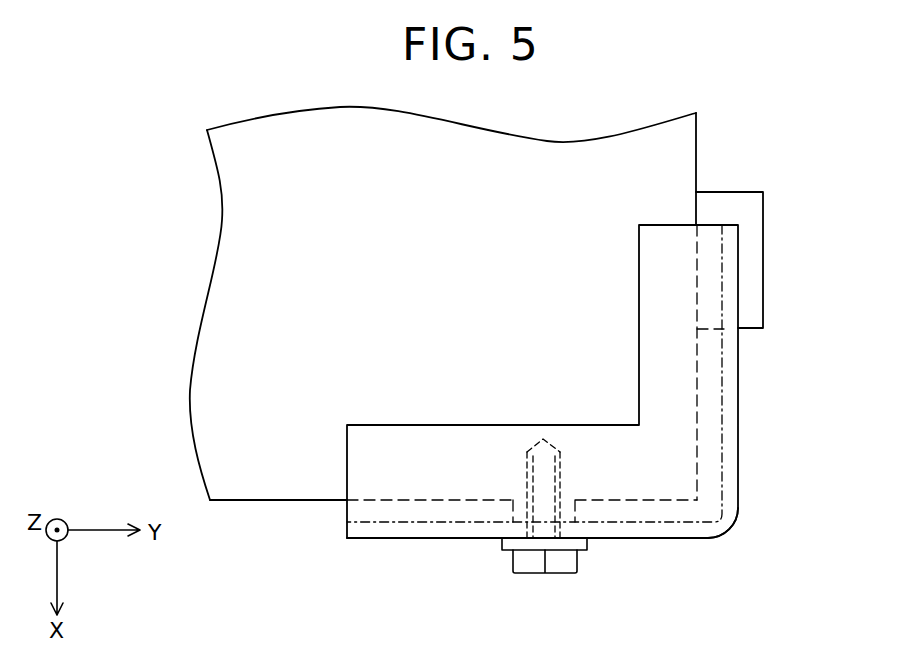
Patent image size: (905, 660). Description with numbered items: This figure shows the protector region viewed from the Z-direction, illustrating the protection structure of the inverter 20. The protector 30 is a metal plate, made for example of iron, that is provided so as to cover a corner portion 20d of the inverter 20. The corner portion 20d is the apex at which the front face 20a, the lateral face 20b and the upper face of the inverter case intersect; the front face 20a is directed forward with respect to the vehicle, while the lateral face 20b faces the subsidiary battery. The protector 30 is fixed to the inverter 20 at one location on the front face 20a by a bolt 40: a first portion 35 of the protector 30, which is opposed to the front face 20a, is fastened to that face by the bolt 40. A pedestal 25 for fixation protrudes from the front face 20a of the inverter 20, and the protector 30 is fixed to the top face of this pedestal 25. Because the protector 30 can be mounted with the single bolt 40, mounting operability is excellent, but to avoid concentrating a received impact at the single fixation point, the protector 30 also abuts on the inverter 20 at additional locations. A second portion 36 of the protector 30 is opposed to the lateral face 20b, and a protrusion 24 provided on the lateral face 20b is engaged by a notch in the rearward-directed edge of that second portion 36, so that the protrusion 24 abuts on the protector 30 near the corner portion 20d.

The inverter 20 is at (206, 129).
The front face 20a is at (232, 207).
The lateral face 20b is at (698, 148).
The corner portion 20d is at (703, 501).
The protrusion 24 is at (750, 262).
The pedestal 25 is at (513, 503).
The protector 30 is at (723, 410).
The first portion 35 is at (638, 540).
The second portion 36 is at (738, 484).
The bolt 40 is at (558, 566).